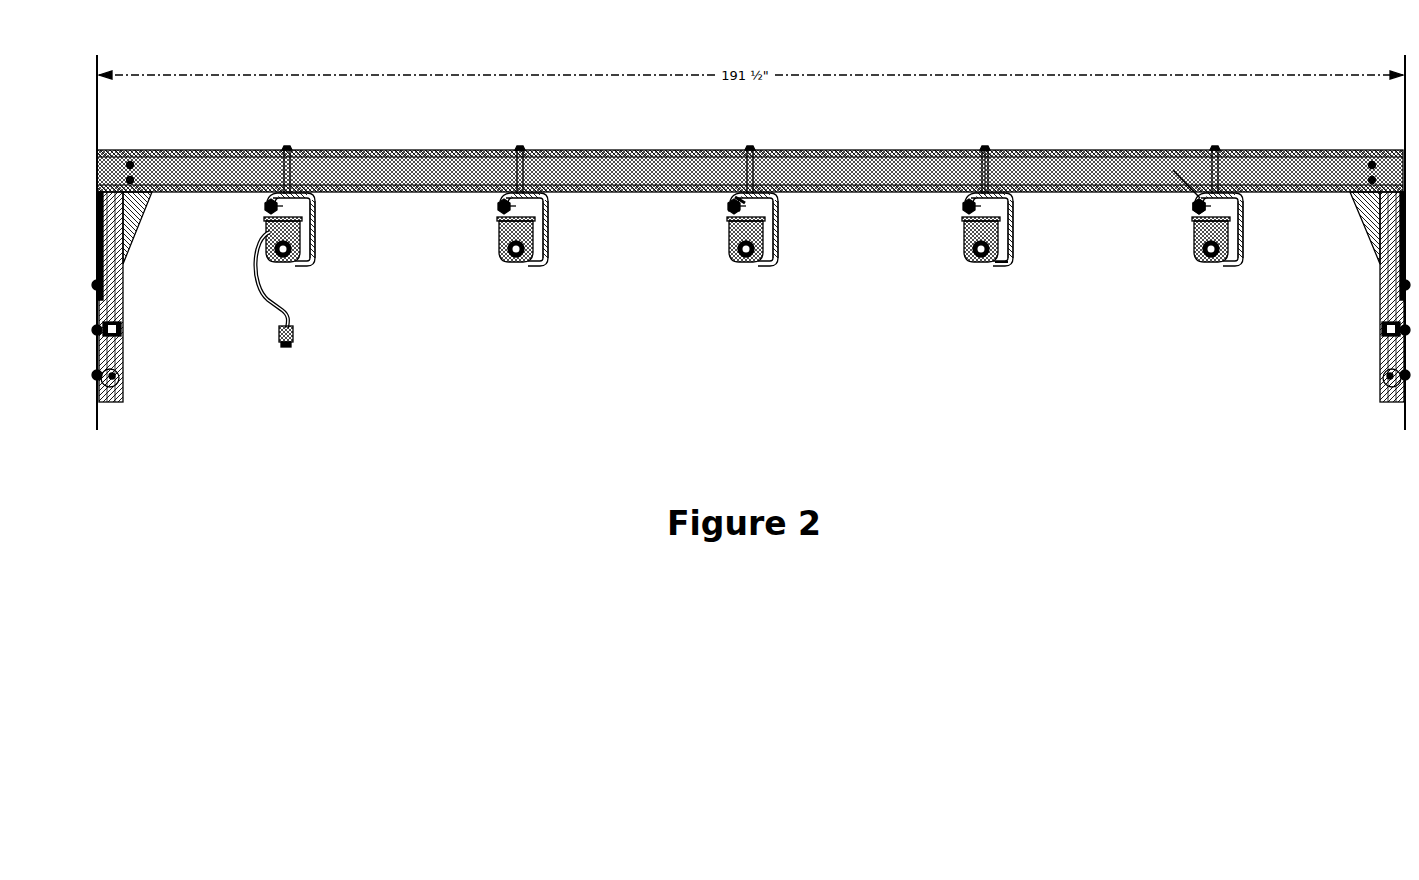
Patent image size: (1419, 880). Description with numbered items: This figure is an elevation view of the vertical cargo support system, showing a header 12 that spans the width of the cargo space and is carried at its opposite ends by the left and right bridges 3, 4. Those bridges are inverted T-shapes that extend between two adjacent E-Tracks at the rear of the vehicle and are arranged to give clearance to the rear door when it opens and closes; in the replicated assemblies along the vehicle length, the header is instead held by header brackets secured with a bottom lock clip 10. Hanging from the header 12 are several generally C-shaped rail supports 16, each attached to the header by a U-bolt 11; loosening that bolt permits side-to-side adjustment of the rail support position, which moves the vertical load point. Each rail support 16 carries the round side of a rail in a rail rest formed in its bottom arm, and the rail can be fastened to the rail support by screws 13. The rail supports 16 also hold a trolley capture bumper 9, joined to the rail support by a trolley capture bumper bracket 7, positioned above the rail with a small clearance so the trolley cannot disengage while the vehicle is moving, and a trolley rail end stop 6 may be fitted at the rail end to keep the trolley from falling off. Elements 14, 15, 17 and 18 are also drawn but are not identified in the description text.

The left bridge 3 is at (124, 303).
The right bridge 4 is at (1379, 301).
The trolley rail end stop 6 is at (505, 232).
The trolley capture bumper bracket 7 is at (1162, 157).
The trolley capture bumper 9 is at (1194, 206).
The bottom lock clip 10 is at (118, 387).
The U-bolt 11 is at (987, 149).
The header 12 is at (640, 150).
The screws 13 is at (979, 264).
The pivot pin 14 is at (736, 209).
The hook bracket 15 is at (772, 208).
The rail support 16 is at (1004, 268).
The pivot nut 17 is at (736, 203).
The bracket bolt 18 is at (122, 338).